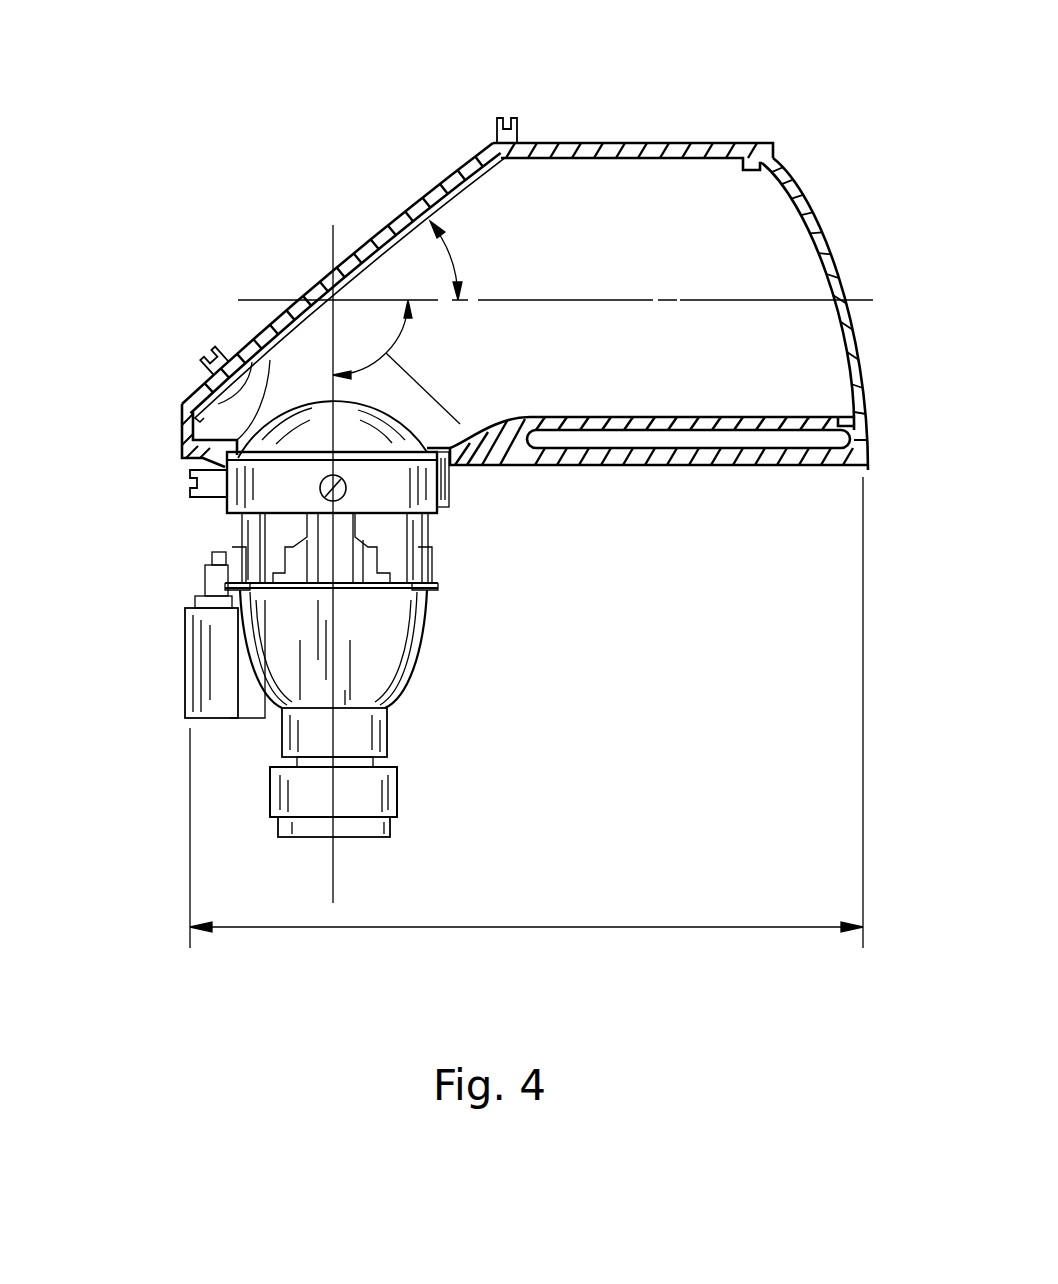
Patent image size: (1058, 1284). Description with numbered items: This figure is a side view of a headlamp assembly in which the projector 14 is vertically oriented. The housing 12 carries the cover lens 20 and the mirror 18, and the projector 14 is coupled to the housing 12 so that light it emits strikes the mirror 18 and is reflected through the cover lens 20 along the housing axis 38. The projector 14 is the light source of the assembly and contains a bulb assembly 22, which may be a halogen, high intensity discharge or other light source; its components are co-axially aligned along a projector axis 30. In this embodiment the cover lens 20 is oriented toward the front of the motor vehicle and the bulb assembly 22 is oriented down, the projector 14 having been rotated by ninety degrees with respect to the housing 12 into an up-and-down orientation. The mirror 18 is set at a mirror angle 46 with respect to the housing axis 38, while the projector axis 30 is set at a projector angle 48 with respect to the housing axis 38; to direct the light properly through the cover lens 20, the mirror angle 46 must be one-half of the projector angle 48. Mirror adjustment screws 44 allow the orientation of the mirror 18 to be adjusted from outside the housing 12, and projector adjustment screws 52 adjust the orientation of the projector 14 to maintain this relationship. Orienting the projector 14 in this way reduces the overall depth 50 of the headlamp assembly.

The housing 12 is at (660, 106).
The projector 14 is at (165, 717).
The mirror 18 is at (181, 432).
The cover lens 20 is at (813, 203).
The bulb assembly 22 is at (363, 797).
The projector axis 30 is at (332, 240).
The housing axis 38 is at (873, 300).
The mirror adjustment screws 44 is at (502, 118).
The mirror angle 46 is at (452, 263).
The projector angle 48 is at (460, 424).
The overall depth 50 is at (508, 930).
The projector adjustment screws 52 is at (190, 488).